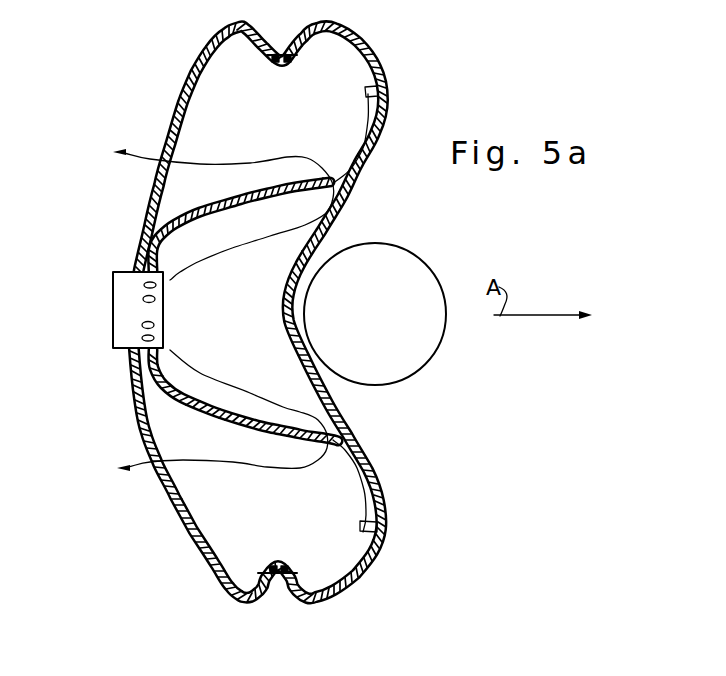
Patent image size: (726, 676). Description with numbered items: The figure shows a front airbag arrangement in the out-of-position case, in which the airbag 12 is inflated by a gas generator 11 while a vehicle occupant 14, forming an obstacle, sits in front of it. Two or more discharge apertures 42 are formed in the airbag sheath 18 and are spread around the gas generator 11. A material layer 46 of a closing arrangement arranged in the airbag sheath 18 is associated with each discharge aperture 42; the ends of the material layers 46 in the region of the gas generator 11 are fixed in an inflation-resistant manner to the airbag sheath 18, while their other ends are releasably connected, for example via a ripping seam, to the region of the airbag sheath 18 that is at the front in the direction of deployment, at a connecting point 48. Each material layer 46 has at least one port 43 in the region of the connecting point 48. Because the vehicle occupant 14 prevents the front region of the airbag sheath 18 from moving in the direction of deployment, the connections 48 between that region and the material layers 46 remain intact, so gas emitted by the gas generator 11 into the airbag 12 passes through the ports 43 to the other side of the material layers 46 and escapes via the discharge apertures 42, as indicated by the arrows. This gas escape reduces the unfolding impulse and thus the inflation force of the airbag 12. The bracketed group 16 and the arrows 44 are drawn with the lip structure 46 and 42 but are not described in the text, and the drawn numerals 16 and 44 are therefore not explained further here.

The gas generator 11 is at (114, 312).
The airbag 12 is at (277, 309).
The vehicle occupant 14 is at (412, 281).
The sealing lip arrangement 16 is at (185, 308).
The airbag sheath 18 is at (381, 70).
The discharge aperture 42 is at (212, 302).
The port 43 is at (364, 134).
The sealing lip 44 is at (214, 306).
The material layer 46 is at (208, 207).
The connecting point 48 is at (378, 92).